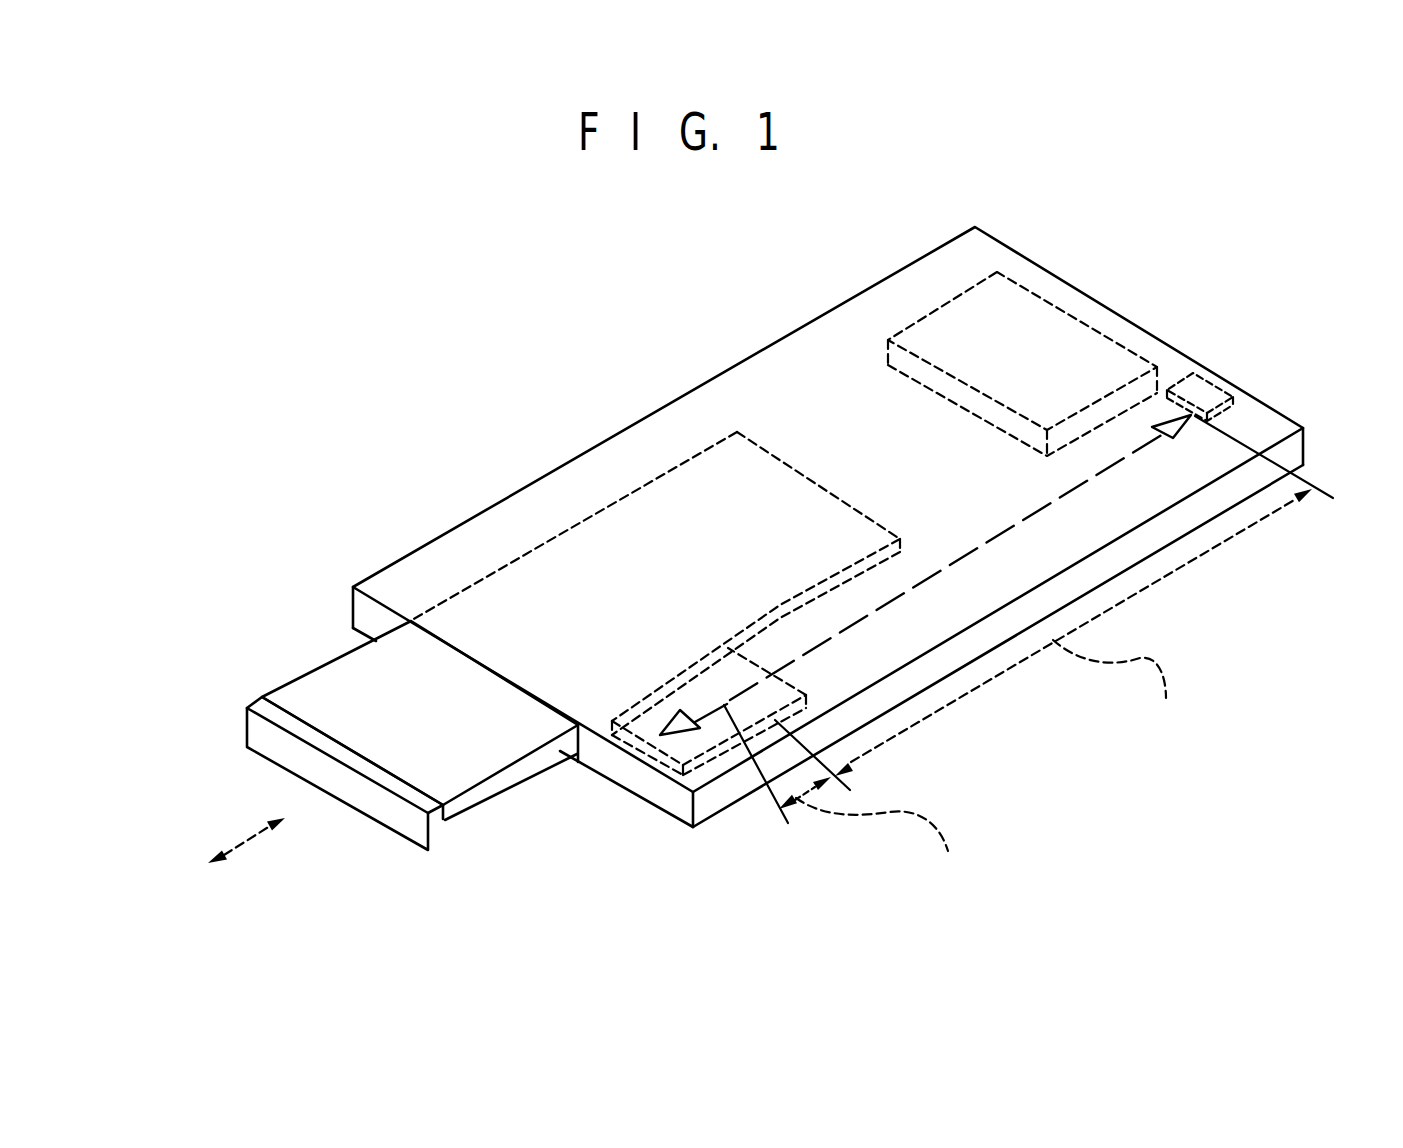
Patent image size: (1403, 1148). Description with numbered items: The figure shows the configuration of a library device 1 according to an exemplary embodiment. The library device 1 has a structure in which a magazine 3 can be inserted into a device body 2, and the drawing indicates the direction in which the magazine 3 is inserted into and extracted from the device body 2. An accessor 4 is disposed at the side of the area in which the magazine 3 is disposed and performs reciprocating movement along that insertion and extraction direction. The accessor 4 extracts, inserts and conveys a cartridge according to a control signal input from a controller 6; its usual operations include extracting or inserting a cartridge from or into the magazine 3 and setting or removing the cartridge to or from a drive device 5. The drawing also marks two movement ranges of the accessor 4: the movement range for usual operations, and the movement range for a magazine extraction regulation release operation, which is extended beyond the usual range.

The library device 1 is at (683, 356).
The device body 2 is at (953, 267).
The magazine 3 is at (363, 665).
The accessor 4 is at (720, 673).
The drive device 5 is at (1017, 300).
The controller 6 is at (1217, 373).